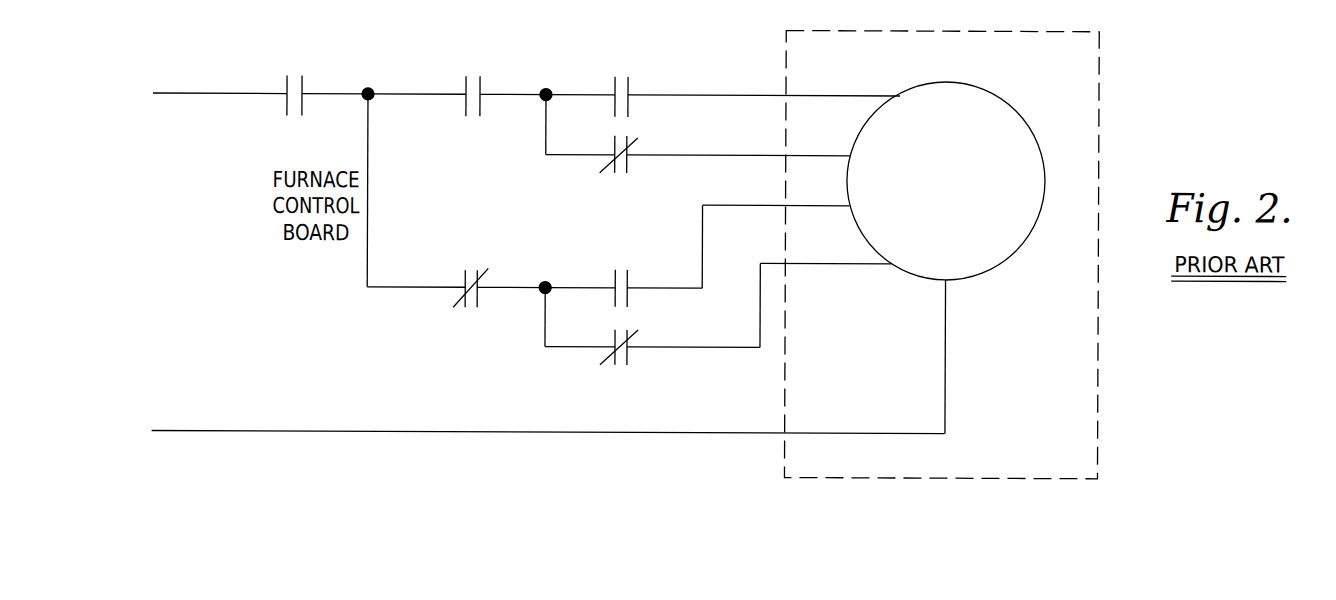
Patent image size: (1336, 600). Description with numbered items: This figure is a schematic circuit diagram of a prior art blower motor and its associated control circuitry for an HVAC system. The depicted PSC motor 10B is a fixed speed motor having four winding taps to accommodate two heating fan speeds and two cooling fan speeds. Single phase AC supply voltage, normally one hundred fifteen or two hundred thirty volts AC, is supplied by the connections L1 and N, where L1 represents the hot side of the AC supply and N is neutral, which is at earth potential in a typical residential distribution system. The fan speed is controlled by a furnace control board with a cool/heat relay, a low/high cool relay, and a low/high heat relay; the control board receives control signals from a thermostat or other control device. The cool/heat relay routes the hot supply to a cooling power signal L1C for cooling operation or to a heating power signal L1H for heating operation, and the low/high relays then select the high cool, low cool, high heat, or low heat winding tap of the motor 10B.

The PSC motor 10B is at (973, 255).
The hot supply connection L1 is at (263, 89).
The cooling power signal L1C is at (634, 120).
The heating power signal L1H is at (629, 304).
The neutral connection N is at (548, 415).